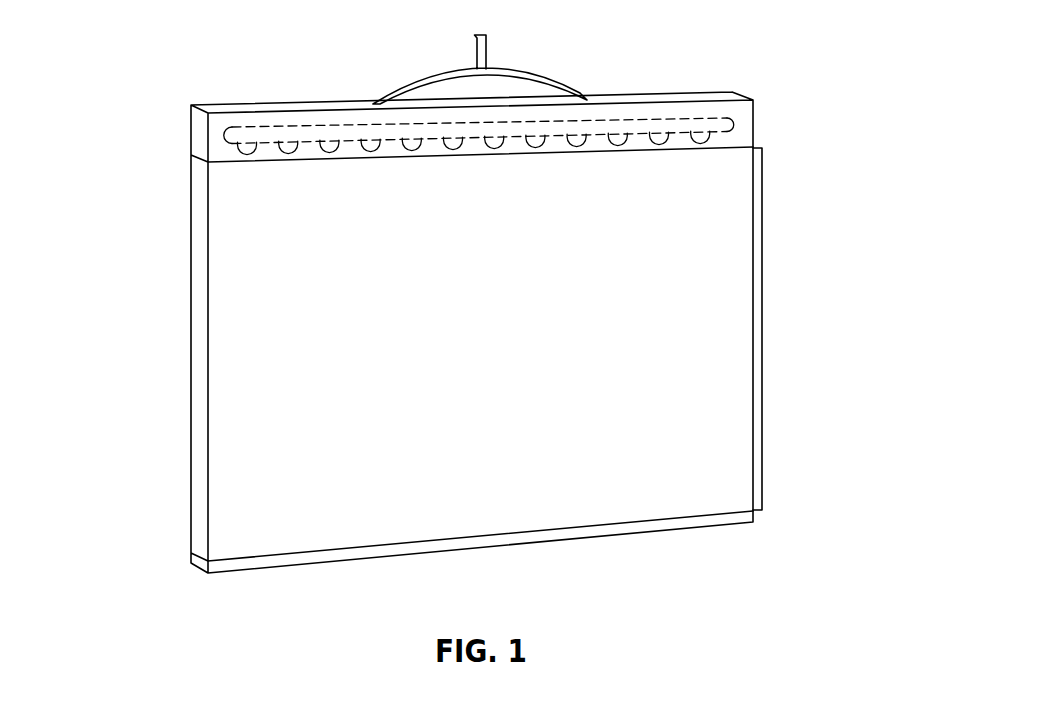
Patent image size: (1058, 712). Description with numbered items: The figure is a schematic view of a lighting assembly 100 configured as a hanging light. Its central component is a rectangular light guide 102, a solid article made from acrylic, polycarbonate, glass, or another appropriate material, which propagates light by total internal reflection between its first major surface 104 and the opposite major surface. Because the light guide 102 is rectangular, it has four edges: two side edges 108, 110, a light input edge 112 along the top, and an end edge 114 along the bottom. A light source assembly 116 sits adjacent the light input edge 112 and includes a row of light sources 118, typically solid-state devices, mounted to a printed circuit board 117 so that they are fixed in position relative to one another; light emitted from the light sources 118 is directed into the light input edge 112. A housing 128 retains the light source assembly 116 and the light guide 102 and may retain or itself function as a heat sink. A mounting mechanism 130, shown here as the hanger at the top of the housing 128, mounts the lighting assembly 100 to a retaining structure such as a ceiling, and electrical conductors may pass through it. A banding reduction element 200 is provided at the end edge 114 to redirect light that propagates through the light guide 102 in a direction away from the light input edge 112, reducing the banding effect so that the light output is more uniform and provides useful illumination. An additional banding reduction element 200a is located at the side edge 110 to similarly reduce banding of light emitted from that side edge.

The lighting assembly 100 is at (213, 31).
The light guide 102 is at (668, 360).
The first major surface 104 is at (277, 427).
The side edge 108 is at (202, 325).
The side edge 110 is at (753, 428).
The light input edge 112 is at (660, 165).
The end edge 114 is at (585, 528).
The light source assembly 116 is at (358, 119).
The printed circuit board 117 is at (733, 122).
The light sources 118 is at (288, 155).
The housing 128 is at (686, 92).
The mounting mechanism 130 is at (487, 56).
The banding reduction element 200 is at (296, 565).
The banding reduction element 200a is at (761, 487).